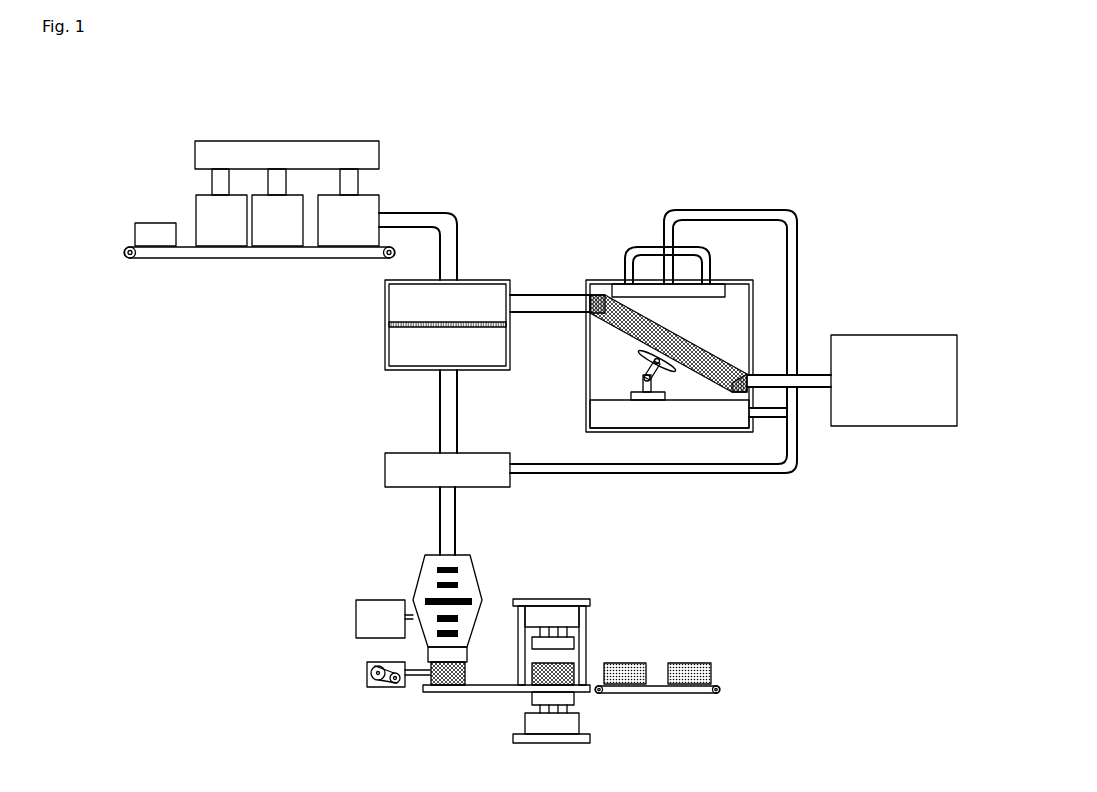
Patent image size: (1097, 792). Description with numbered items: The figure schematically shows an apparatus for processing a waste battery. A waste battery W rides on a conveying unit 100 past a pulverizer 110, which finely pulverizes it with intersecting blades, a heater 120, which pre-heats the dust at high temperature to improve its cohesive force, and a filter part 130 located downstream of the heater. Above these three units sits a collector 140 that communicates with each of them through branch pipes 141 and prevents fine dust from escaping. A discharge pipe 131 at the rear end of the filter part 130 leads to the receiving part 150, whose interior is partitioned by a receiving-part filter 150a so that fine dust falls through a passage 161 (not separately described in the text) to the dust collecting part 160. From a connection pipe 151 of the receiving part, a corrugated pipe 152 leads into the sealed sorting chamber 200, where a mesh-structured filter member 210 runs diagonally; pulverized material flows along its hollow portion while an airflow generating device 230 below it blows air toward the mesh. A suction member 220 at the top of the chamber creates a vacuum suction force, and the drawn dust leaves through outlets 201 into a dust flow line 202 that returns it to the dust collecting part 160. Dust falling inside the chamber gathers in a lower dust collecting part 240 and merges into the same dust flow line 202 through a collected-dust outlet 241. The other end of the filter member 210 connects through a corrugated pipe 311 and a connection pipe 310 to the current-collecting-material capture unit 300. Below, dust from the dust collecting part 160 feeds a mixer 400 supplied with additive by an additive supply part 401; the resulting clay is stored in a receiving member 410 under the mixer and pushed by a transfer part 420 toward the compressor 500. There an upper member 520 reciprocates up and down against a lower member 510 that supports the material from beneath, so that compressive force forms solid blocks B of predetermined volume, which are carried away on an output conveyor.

The conveying unit 100 is at (203, 268).
The waste battery W is at (156, 223).
The pulverizer 110 is at (222, 246).
The heater 120 is at (278, 246).
The filter part 130 is at (350, 246).
The discharge pipe 131 is at (407, 212).
The collector 140 is at (207, 141).
The branch pipe 141 is at (352, 178).
The receiving part 150 is at (385, 350).
The receiving-part filter 150a is at (398, 325).
The connection pipe 151 is at (546, 295).
The corrugated pipe 152 is at (596, 297).
The dust collecting part 160 is at (385, 470).
The connection pipe 161 is at (440, 410).
The sorting chamber 200 is at (603, 282).
The outlet 201 is at (642, 337).
The dust flow line 202 is at (741, 204).
The filter member 210 is at (688, 341).
The suction member 220 is at (720, 284).
The airflow generating device 230 is at (626, 378).
The dust collecting part 240 is at (605, 412).
The collected-dust outlet 241 is at (772, 420).
The current-collecting-material capture unit 300 is at (893, 335).
The connection pipe 310 is at (815, 373).
The corrugated pipe 311 is at (745, 370).
The mixer 400 is at (482, 578).
The additive supply part 401 is at (356, 617).
The receiving member 410 is at (470, 686).
The transfer part 420 is at (387, 690).
The compressor 500 is at (573, 592).
The lower member 510 is at (575, 700).
The upper member 520 is at (578, 642).
The solid block B is at (690, 668).